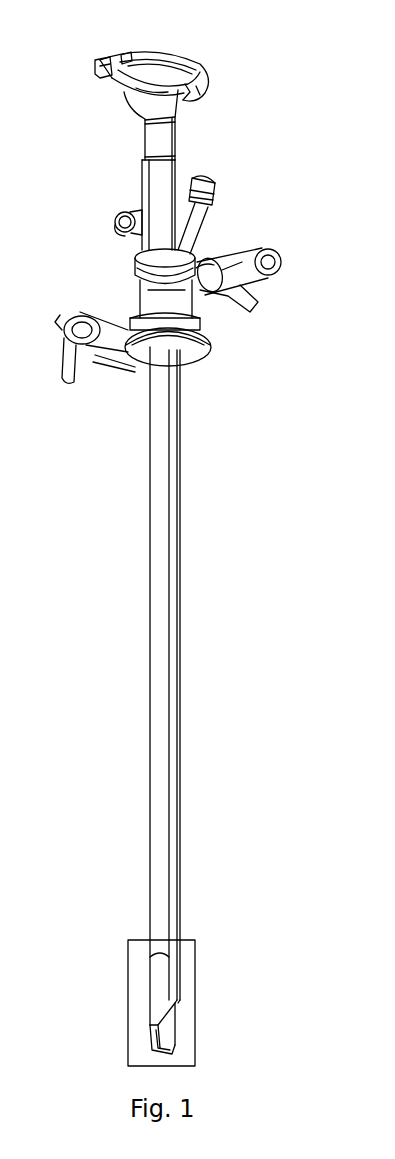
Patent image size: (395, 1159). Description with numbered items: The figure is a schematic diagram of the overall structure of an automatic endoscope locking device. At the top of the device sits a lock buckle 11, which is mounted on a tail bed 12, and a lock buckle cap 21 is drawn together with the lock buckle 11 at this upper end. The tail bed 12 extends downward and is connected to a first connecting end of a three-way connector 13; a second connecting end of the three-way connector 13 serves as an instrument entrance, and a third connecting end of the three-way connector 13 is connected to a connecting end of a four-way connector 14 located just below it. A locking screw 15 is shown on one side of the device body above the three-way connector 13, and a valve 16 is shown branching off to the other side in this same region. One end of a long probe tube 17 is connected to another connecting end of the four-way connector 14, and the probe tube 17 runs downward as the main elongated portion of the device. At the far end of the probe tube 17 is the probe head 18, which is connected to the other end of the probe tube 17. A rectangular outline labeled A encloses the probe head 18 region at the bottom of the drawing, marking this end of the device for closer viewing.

The lock buckle 11 is at (107, 60).
The lock buckle cap 21 is at (113, 70).
The tail bed 12 is at (156, 143).
The three-way connector 13 is at (138, 264).
The four-way connector 14 is at (137, 368).
The locking screw 15 is at (118, 212).
The valve 16 is at (218, 240).
The probe tube 17 is at (160, 774).
The probe head 18 is at (150, 998).
The detail region A is at (190, 940).